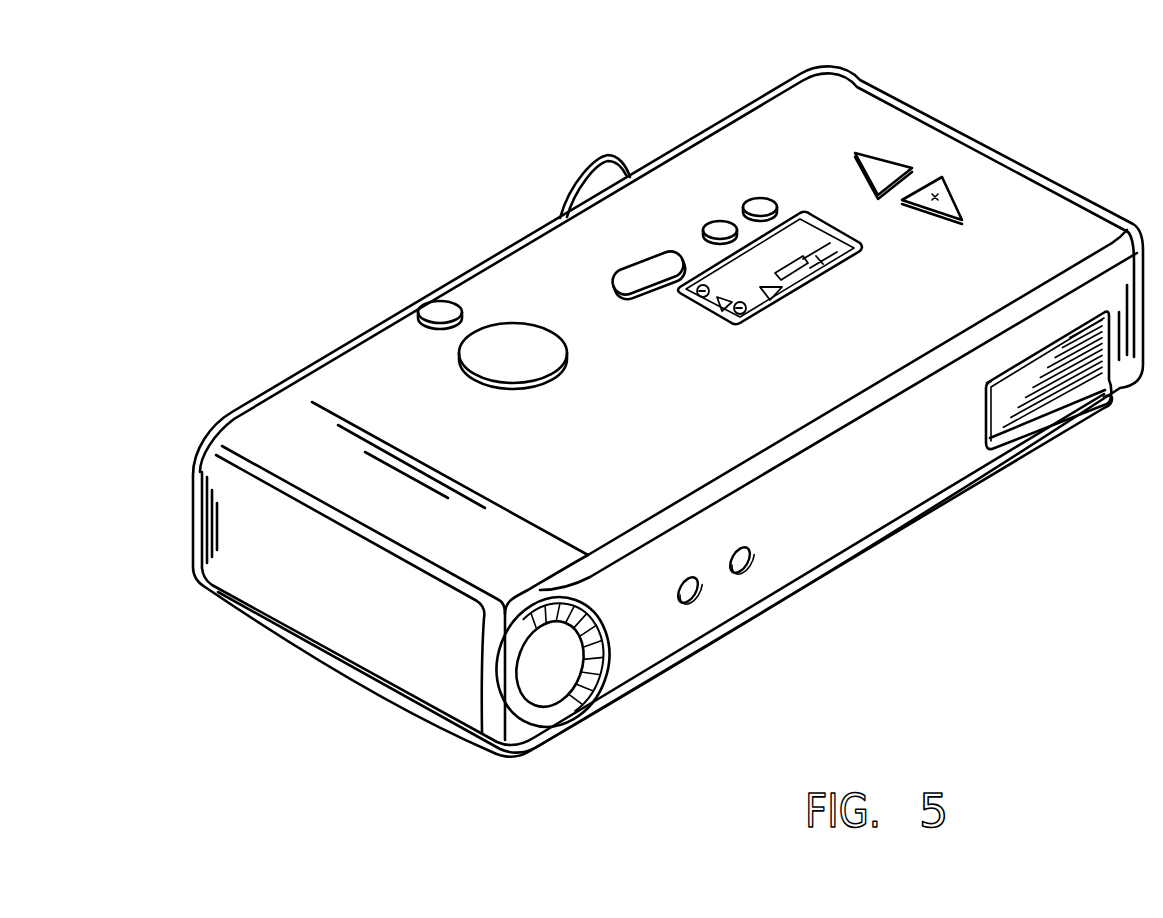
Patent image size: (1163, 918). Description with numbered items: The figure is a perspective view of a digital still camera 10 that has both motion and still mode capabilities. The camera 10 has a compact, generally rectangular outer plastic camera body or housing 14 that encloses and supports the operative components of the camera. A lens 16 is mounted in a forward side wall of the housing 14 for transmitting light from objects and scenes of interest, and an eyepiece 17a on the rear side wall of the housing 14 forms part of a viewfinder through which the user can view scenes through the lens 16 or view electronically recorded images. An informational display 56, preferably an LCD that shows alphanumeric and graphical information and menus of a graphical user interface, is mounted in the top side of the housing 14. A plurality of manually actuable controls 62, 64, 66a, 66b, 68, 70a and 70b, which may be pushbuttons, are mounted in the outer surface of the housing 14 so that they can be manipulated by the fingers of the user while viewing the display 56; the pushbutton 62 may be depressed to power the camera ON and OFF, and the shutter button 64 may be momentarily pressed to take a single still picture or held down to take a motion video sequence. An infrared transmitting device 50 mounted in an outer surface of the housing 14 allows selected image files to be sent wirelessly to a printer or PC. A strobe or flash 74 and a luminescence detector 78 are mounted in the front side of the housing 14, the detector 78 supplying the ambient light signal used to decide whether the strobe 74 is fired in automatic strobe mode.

The digital still camera 10 is at (330, 733).
The camera body or housing 14 is at (1055, 208).
The lens 16 is at (549, 688).
The eyepiece 17a is at (572, 188).
The infrared transmitting device 50 is at (750, 556).
The informational display 56 is at (800, 212).
The pushbutton 62 is at (440, 306).
The shutter button 64 is at (470, 354).
The manually actuable control 66a is at (882, 163).
The manually actuable control 66b is at (950, 186).
The manually actuable control 68 is at (647, 275).
The manually actuable control 70a is at (720, 230).
The manually actuable control 70b is at (760, 207).
The strobe or flash 74 is at (1004, 432).
The luminescence detector 78 is at (689, 605).